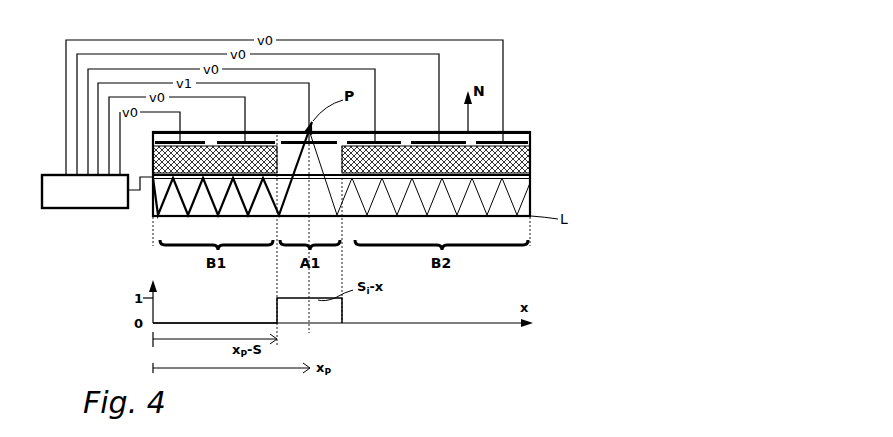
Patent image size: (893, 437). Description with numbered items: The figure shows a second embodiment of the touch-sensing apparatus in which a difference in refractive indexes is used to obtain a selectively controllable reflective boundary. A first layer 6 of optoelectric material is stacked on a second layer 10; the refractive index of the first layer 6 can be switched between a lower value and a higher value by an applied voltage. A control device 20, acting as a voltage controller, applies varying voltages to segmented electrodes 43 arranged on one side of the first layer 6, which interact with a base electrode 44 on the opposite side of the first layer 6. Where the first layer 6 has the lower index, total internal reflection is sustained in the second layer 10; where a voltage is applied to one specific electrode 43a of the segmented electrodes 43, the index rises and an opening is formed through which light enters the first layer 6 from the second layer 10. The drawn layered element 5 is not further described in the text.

The control device 20 is at (75, 201).
The optical element / display device 5 is at (510, 137).
The segmented electrodes 43 is at (531, 144).
The specific electrode 43a is at (332, 141).
The first layer 6 is at (531, 163).
The base electrode 44 is at (531, 176).
The second layer 10 is at (518, 193).